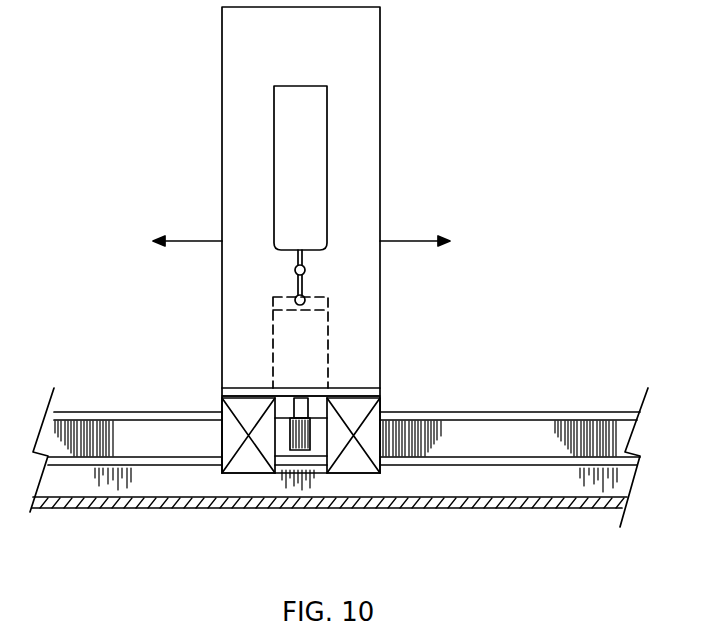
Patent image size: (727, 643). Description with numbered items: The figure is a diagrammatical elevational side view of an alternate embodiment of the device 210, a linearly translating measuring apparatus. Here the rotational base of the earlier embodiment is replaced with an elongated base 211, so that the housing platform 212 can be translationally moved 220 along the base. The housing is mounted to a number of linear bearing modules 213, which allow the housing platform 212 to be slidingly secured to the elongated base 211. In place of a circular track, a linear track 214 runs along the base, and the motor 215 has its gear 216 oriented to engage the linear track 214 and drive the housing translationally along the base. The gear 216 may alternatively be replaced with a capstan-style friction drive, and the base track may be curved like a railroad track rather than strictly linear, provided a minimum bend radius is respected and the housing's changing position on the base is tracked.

The device 210 is at (483, 114).
The elongated base 211 is at (572, 412).
The housing platform 212 is at (363, 388).
The linear bearing modules 213 is at (243, 468).
The linear track 214 is at (410, 424).
The motor 215 is at (328, 324).
The gear 216 is at (310, 450).
The translational movement 220 is at (405, 241).